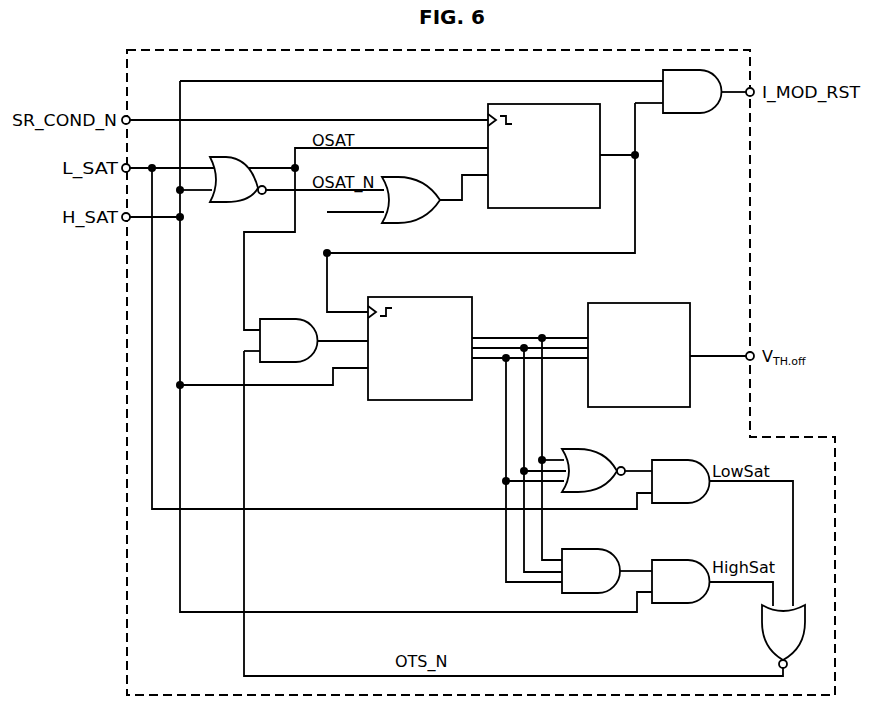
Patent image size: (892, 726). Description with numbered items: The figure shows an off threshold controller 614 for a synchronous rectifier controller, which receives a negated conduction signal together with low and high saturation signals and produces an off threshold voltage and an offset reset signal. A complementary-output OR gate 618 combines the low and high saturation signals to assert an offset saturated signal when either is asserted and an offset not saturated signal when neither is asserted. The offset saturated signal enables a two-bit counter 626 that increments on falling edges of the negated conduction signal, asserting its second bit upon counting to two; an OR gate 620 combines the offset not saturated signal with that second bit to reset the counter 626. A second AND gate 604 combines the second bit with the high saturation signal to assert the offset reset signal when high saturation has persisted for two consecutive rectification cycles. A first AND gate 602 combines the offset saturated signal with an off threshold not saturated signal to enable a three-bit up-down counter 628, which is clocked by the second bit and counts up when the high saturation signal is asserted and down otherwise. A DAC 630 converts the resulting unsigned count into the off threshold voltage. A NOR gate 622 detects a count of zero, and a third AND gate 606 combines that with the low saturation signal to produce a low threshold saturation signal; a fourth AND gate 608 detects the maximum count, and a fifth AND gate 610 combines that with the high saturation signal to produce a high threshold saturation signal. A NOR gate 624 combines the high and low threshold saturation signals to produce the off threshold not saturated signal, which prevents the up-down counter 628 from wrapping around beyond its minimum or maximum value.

The off threshold controller 614 is at (125, 50).
The complementary-output OR gate 618 is at (246, 160).
The OR gate 620 is at (424, 218).
The 2-bit counter 626 is at (526, 214).
The second AND gate 604 is at (683, 114).
The first AND gate 602 is at (270, 320).
The 3-bit up-down counter 628 is at (405, 402).
The Digital-to-Analog Converter (DAC) 630 is at (629, 303).
The second NOR gate 622 is at (604, 452).
The third AND gate 606 is at (693, 460).
The fourth AND gate 608 is at (588, 549).
The fifth AND gate 610 is at (670, 560).
The second NOR gate 624 is at (762, 640).